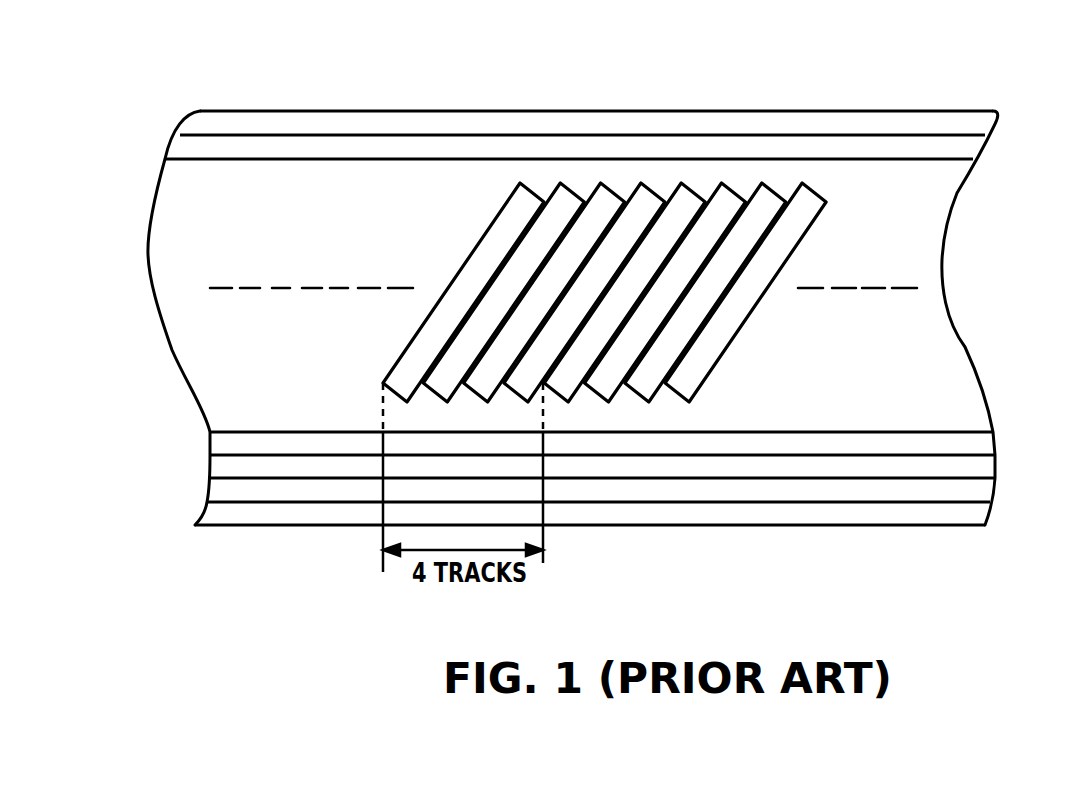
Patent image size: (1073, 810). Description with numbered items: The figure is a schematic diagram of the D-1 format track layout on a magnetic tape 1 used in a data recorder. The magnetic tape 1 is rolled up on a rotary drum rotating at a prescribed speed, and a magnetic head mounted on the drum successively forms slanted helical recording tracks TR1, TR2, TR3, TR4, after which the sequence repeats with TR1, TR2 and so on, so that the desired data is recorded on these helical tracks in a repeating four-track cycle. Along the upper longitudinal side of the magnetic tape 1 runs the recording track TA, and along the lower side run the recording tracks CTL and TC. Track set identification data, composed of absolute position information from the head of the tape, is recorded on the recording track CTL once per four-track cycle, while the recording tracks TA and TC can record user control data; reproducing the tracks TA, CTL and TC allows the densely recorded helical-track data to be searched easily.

The magnetic tape 1 is at (928, 260).
The recording track TA is at (957, 148).
The recording track CTL is at (812, 437).
The recording track TC is at (812, 487).
The helical recording track TR1 is at (527, 187).
The helical recording track TR2 is at (578, 195).
The helical recording track TR3 is at (620, 195).
The helical recording track TR4 is at (658, 190).